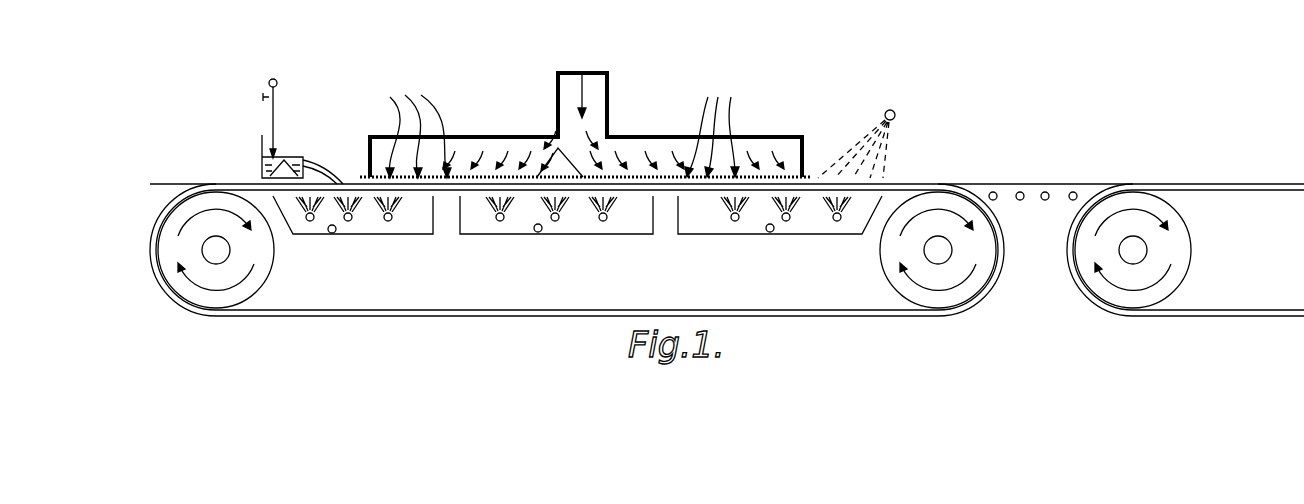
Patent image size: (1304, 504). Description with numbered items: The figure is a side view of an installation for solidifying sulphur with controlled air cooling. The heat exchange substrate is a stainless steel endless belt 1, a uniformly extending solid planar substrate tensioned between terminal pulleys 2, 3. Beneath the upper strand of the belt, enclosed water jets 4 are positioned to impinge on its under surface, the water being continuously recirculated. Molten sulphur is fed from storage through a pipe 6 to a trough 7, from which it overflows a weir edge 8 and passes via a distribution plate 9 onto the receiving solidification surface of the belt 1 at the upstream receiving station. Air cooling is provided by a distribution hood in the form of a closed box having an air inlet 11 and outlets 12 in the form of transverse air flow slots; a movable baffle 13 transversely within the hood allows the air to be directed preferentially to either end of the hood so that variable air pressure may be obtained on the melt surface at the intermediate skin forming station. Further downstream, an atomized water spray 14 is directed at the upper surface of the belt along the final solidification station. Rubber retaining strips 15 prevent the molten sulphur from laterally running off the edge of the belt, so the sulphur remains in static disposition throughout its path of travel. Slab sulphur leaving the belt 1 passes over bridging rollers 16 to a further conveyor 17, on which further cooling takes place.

The stainless steel endless belt 1 is at (612, 310).
The terminal pulley 2 is at (263, 276).
The terminal pulley 3 is at (893, 258).
The water jets 4 is at (378, 222).
The pipe 6 is at (278, 109).
The trough 7 is at (262, 166).
The weir edge 8 is at (289, 164).
The distribution plate 9 is at (322, 173).
The air inlet 11 is at (592, 88).
The outlets 12 is at (586, 125).
The movable baffle 13 is at (548, 157).
The atomized water spray 14 is at (893, 111).
The rubber retaining strips 15 is at (200, 186).
The bridging rollers 16 is at (1035, 198).
The further conveyor 17 is at (1215, 310).